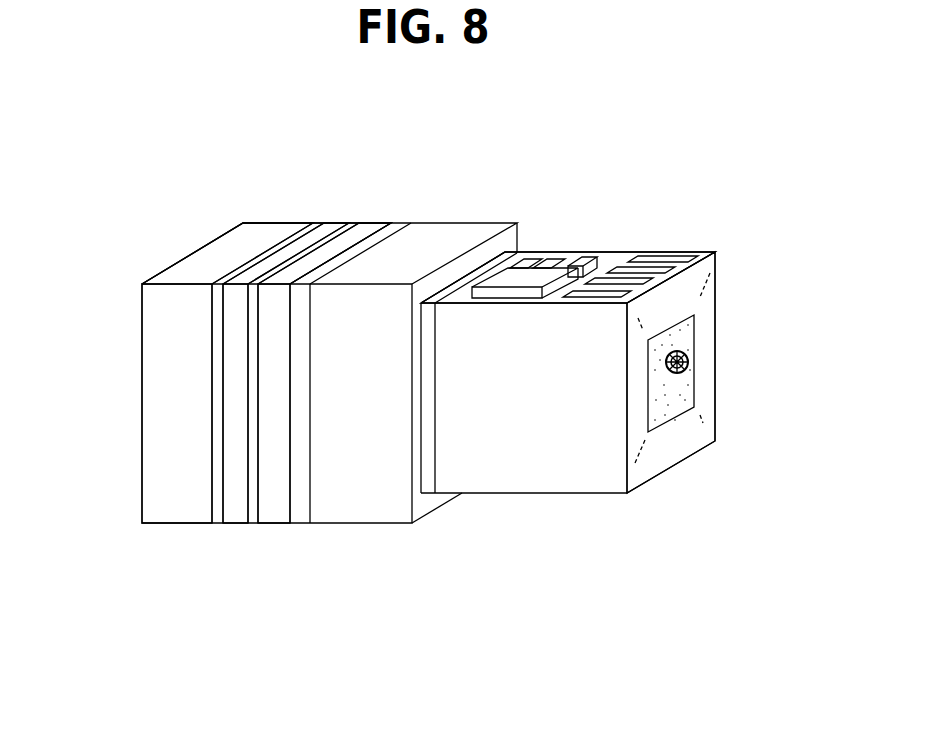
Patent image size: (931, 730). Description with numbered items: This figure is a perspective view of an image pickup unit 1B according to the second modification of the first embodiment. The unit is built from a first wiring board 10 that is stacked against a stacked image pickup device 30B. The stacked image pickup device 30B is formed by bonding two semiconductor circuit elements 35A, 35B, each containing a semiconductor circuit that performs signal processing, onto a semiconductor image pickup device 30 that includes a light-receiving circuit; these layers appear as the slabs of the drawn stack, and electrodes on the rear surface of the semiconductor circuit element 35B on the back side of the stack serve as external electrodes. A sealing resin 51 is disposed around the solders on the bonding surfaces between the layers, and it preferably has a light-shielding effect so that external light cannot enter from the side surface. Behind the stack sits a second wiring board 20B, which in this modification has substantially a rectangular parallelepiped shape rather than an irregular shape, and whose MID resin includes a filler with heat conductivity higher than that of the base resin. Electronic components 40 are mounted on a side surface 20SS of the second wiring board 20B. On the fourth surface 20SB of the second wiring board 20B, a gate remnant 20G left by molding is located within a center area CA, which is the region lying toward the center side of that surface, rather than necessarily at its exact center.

The image pickup unit 1B is at (145, 228).
The first wiring board 10 is at (458, 223).
The stacked image pickup device 30B is at (420, 148).
The semiconductor image pickup device 30 is at (285, 222).
The semiconductor circuit element 35A is at (337, 222).
The semiconductor circuit element 35B is at (385, 222).
The sealing resin 51 is at (215, 525).
The second wiring board 20B is at (592, 252).
The side surface 20SS is at (619, 253).
The electronic components 40 is at (555, 251).
The fourth surface 20SB is at (666, 442).
The center area CA is at (672, 322).
The gate remnant 20G is at (688, 357).